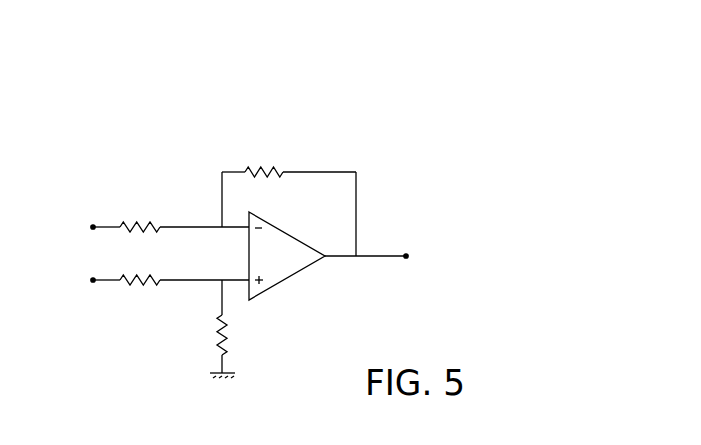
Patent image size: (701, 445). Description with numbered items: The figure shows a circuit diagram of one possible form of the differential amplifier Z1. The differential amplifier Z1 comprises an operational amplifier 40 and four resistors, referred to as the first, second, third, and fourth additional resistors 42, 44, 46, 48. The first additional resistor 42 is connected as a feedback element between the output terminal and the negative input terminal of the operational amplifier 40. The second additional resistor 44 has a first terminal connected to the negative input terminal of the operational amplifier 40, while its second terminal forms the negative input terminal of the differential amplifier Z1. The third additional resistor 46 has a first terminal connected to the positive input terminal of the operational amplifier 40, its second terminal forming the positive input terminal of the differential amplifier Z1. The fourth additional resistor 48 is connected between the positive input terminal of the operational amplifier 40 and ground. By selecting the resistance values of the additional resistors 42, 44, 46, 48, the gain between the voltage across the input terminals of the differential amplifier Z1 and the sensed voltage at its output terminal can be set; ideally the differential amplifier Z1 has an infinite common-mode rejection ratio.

The operational amplifier 40 is at (286, 271).
The first additional resistor 42 is at (272, 167).
The second additional resistor 44 is at (150, 222).
The third additional resistor 46 is at (140, 285).
The fourth additional resistor 48 is at (218, 349).
The differential amplifier Z1 is at (382, 149).